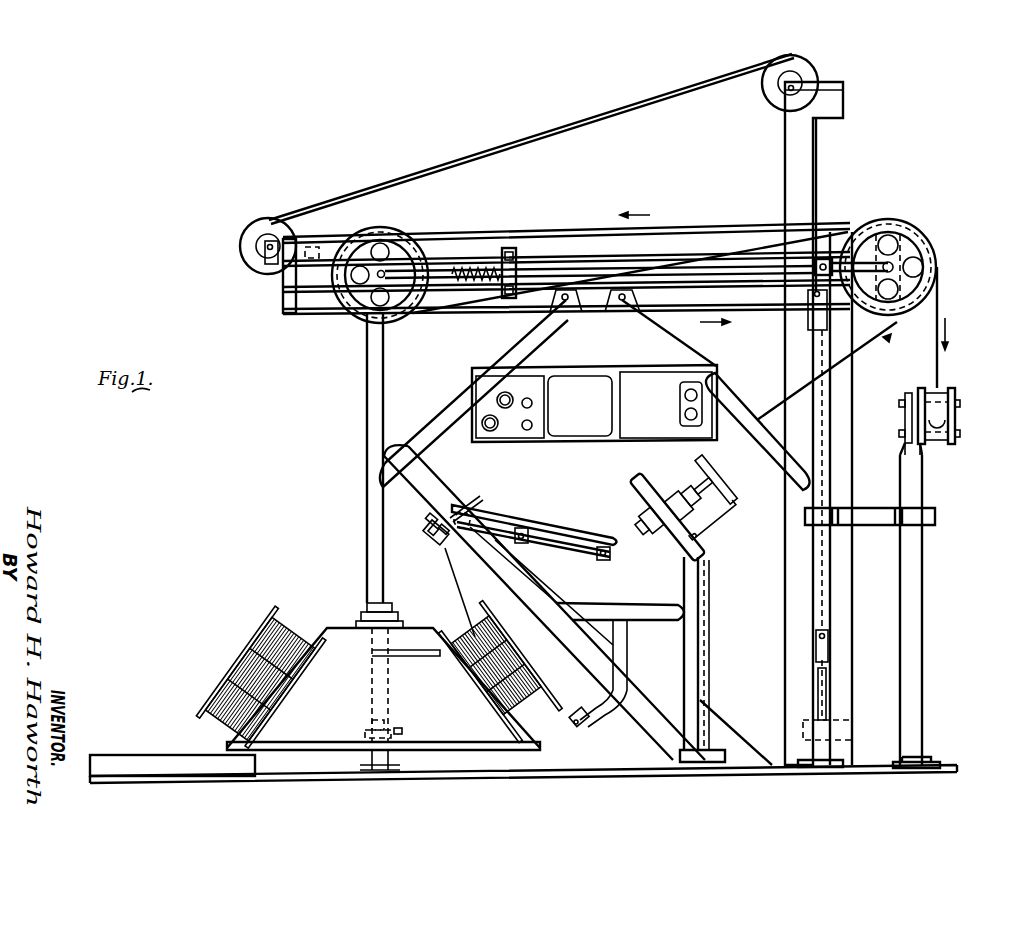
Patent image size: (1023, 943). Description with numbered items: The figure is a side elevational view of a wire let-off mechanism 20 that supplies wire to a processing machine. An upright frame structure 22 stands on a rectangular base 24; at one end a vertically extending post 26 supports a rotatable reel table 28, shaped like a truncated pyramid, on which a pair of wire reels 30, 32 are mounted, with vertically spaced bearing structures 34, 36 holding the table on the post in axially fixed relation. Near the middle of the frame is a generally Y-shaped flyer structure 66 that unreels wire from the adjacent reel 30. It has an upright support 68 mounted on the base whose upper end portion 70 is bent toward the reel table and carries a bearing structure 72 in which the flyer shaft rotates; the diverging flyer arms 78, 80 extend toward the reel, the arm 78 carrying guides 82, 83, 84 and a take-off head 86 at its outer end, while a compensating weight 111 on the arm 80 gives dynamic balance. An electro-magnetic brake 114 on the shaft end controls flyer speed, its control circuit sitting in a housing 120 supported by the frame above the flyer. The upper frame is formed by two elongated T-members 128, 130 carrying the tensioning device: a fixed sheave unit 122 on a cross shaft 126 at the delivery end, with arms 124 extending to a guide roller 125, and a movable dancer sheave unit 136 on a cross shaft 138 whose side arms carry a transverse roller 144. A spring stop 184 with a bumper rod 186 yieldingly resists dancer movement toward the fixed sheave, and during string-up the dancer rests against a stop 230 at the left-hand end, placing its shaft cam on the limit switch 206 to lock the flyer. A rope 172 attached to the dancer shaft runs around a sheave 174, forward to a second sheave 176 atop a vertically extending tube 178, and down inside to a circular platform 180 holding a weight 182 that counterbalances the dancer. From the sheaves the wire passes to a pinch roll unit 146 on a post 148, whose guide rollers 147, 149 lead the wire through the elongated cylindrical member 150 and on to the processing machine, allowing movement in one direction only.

The wire let-off mechanism 20 is at (600, 480).
The upright frame structure 22 is at (360, 373).
The rectangular base 24 is at (490, 783).
The vertically extending post 26 is at (366, 430).
The rotatable reel table 28 is at (353, 706).
The wire reel 30 is at (548, 710).
The wire reel 32 is at (225, 665).
The bearing structure 34 is at (360, 612).
The bearing structure 36 is at (402, 726).
The flyer structure 66 is at (575, 530).
The upright support 68 is at (700, 608).
The upper end portion 70 is at (686, 545).
The bearing structure 72 is at (672, 505).
The flyer arm 78 is at (537, 520).
The flyer arm 80 is at (626, 645).
The guide 82 is at (470, 515).
The guide 83 is at (526, 544).
The roller guide 84 is at (612, 556).
The take-off head 86 is at (418, 540).
The compensating weight 111 is at (584, 724).
The electro-magnetic brake 114 is at (720, 490).
The housing 120 is at (570, 368).
The fixed sheave unit 122 is at (905, 226).
The arms 124 is at (850, 262).
The guide roller 125 is at (820, 262).
The cross shaft 126 is at (908, 258).
The T-member 128 is at (683, 228).
The T-member 130 is at (742, 318).
The dancer sheave unit 136 is at (385, 228).
The cross shaft 138 is at (379, 277).
The transverse roller 144 is at (455, 268).
The pinch roll unit 146 is at (956, 393).
The guide roller 147 is at (950, 412).
The post 148 is at (924, 566).
The guide roller 149 is at (945, 446).
The elongated cylindrical member 150 is at (948, 424).
The rope 172 is at (477, 155).
The sheave 174 is at (250, 230).
The second sheave 176 is at (805, 68).
The vertically extending tube 178 is at (845, 110).
The circular platform 180 is at (855, 736).
The weight 182 is at (838, 716).
The spring stop 184 is at (520, 252).
The bumper rod 186 is at (486, 283).
The limit switch 206 is at (311, 240).
The stop 230 is at (283, 286).